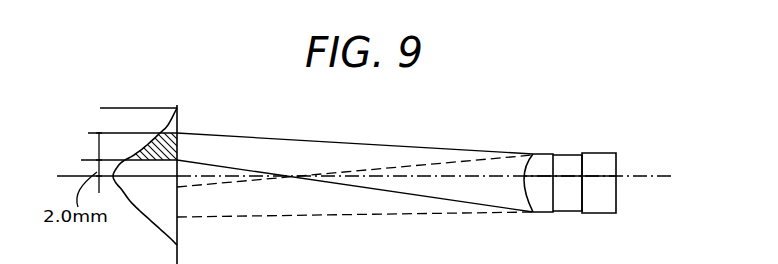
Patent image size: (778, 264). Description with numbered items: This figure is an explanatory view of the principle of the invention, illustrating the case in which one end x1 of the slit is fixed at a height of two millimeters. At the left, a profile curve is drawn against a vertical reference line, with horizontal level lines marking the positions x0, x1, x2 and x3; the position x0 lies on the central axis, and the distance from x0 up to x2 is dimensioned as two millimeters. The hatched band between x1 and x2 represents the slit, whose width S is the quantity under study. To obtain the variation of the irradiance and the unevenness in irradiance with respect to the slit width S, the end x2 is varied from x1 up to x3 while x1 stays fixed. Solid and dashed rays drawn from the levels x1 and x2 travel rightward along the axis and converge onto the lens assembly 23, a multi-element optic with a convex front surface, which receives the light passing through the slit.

The lens assembly 23 is at (569, 143).
The upper end of slit x3 is at (129, 107).
The variable end of slit x2 is at (122, 133).
The fixed end of slit x1 is at (119, 160).
The position level x0 (optical axis) x0 is at (104, 178).
The slit width S is at (99, 145).